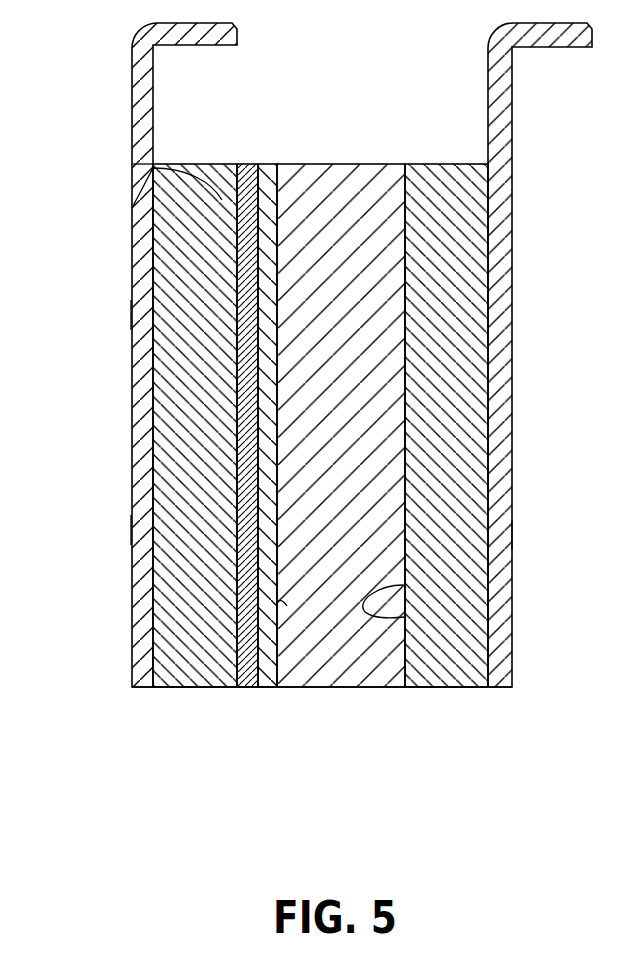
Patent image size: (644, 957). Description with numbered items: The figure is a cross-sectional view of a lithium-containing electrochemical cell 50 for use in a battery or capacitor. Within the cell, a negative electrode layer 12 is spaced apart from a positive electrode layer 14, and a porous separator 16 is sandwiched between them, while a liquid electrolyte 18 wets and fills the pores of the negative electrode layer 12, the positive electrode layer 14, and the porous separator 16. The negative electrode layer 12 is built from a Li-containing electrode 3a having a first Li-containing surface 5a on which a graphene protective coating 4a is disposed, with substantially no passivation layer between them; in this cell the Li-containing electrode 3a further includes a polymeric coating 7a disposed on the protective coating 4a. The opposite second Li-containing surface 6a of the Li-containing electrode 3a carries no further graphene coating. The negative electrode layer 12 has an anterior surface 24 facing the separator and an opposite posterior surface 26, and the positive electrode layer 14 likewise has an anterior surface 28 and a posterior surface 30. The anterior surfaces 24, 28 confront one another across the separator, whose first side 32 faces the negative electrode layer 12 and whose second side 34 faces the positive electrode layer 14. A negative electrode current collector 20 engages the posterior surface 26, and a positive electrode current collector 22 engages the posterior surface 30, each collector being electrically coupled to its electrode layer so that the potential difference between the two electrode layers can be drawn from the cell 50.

The Li-containing electrode 3a is at (200, 190).
The protective coating 4a is at (242, 164).
The polymeric coating 7a is at (268, 164).
The negative electrode layer 12 is at (276, 692).
The positive electrode layer 14 is at (450, 687).
The porous separator 16 is at (308, 164).
The liquid electrolyte 18 is at (367, 184).
The negative electrode current collector 20 is at (131, 390).
The positive electrode current collector 22 is at (512, 388).
The anterior surface 24 is at (287, 606).
The posterior surface 26 is at (131, 530).
The anterior surface 28 is at (405, 617).
The posterior surface 30 is at (512, 534).
The first side 32 is at (132, 208).
The second side 34 is at (405, 277).
The first Li-containing surface 5a is at (133, 164).
The second Li-containing surface 6a is at (131, 315).
The electrochemical cell 50 is at (323, 687).